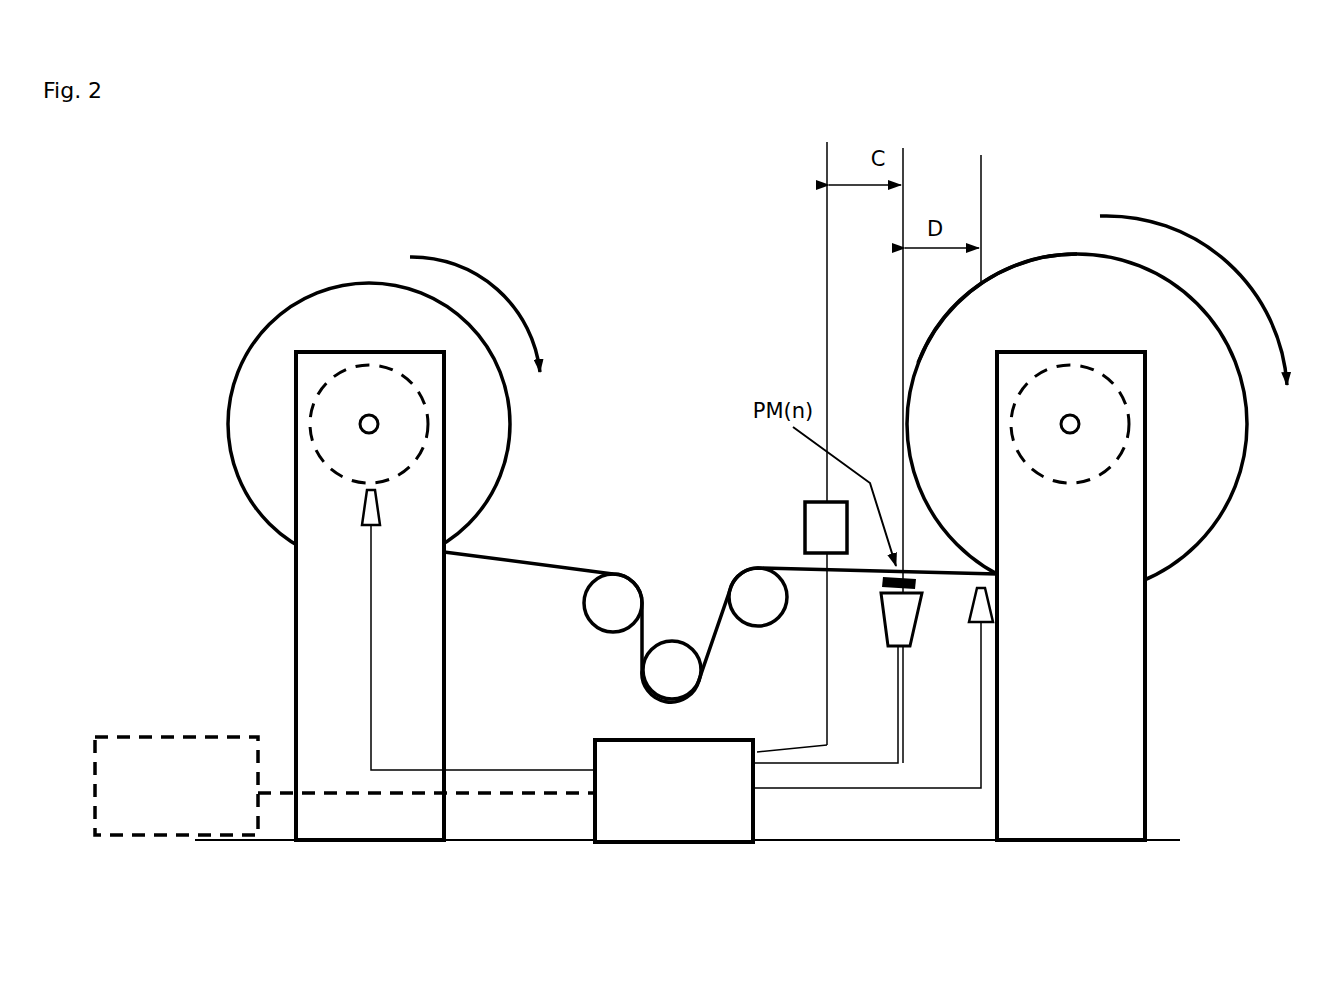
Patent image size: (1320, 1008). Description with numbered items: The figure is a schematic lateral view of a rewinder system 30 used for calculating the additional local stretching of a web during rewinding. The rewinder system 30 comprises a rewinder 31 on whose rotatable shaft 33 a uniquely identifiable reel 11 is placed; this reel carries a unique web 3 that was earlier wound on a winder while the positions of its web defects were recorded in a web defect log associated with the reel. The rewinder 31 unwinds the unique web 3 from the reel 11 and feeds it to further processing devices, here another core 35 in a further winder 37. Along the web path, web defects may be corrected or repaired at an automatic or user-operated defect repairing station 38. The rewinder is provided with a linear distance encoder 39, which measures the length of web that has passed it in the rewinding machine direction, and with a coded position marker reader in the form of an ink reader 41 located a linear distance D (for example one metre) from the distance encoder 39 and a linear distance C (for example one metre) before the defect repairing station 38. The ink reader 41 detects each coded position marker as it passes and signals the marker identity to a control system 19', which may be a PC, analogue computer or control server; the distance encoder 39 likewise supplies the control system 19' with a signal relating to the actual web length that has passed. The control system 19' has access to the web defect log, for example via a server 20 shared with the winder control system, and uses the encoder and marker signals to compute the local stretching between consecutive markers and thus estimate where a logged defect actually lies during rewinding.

The unique web 3 is at (487, 550).
The uniquely identifiable reel 11 is at (910, 358).
The control system 19' is at (632, 755).
The server 20 is at (139, 731).
The rewinder system 30 is at (1086, 218).
The rewinder 31 is at (1084, 561).
The rotatable shaft 33 is at (1098, 446).
The core 35 is at (345, 365).
The further winder 37 is at (310, 480).
The defect repairing station 38 is at (800, 516).
The linear distance encoder 39 is at (992, 616).
The ink reader 41 is at (920, 654).